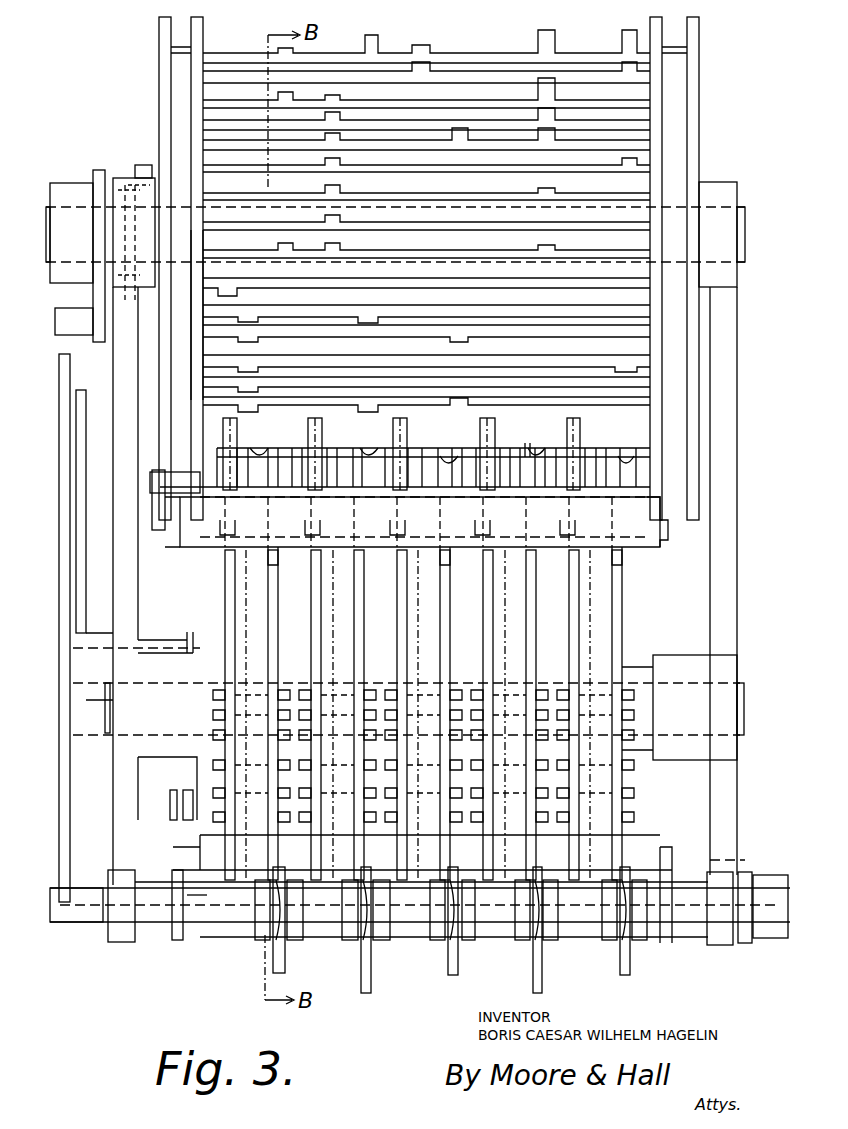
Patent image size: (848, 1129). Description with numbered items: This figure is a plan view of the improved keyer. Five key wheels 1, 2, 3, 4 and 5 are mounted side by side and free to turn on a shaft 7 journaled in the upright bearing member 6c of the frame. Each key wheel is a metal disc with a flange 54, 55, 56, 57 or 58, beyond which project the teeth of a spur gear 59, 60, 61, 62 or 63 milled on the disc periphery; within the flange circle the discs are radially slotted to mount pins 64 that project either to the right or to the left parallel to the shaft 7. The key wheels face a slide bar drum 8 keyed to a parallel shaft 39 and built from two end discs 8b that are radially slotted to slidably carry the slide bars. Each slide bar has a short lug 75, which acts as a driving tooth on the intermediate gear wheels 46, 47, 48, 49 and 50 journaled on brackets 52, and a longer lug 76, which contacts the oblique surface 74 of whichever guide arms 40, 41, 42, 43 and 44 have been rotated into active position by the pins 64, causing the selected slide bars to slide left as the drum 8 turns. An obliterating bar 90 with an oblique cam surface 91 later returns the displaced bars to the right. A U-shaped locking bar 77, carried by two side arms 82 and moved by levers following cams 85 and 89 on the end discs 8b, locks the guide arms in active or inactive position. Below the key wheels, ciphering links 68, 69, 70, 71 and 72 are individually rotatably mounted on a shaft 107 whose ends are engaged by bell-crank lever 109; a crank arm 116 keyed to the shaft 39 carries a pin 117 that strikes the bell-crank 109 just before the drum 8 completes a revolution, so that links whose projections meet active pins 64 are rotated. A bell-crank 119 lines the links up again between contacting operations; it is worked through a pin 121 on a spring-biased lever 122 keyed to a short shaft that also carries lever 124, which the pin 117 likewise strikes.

The key wheel 1 is at (285, 598).
The key wheel 2 is at (370, 598).
The key wheel 3 is at (450, 600).
The key wheel 4 is at (542, 598).
The key wheel 5 is at (622, 596).
The upright bearing member 6c is at (732, 795).
The shaft 7 is at (744, 708).
The slide bar drum 8 is at (699, 95).
The end disc 8b is at (159, 85).
The shaft 39 is at (745, 225).
The guide arm 40 is at (278, 560).
The guide arm 41 is at (360, 525).
The guide arm 42 is at (450, 560).
The guide arm 43 is at (530, 445).
The guide arm 44 is at (622, 560).
The intermediate gear wheel 46 is at (228, 425).
The intermediate gear wheel 47 is at (314, 425).
The intermediate gear wheel 48 is at (400, 418).
The intermediate gear wheel 49 is at (484, 425).
The intermediate gear wheel 50 is at (582, 420).
The bracket 52 is at (258, 447).
The flange 54 is at (278, 620).
The flange 55 is at (372, 618).
The flange 56 is at (458, 618).
The flange 57 is at (544, 618).
The flange 58 is at (630, 616).
The spur gear 59 is at (210, 640).
The spur gear 60 is at (311, 652).
The spur gear 61 is at (407, 652).
The spur gear 62 is at (483, 652).
The spur gear 63 is at (579, 648).
The pin 64 is at (100, 826).
The ciphering link 68 is at (285, 965).
The ciphering link 69 is at (378, 966).
The ciphering link 70 is at (465, 963).
The ciphering link 71 is at (542, 965).
The ciphering link 72 is at (630, 965).
The oblique surface 74 is at (545, 450).
The short lug 75 is at (422, 42).
The long lug 76 is at (375, 37).
The locking bar 77 is at (208, 548).
The side arm 82 is at (189, 343).
The cam 85 is at (699, 24).
The cam 89 is at (204, 22).
The obliterating bar 90 is at (143, 166).
The oblique cam surface 91 is at (148, 237).
The shaft 107 is at (148, 925).
The bell-crank lever 109 is at (70, 795).
The crank arm 116 is at (92, 298).
The pin 117 is at (54, 322).
The bell-crank 119 is at (176, 850).
The pin 121 is at (165, 790).
The lever 122 is at (190, 632).
The lever 124 is at (86, 395).